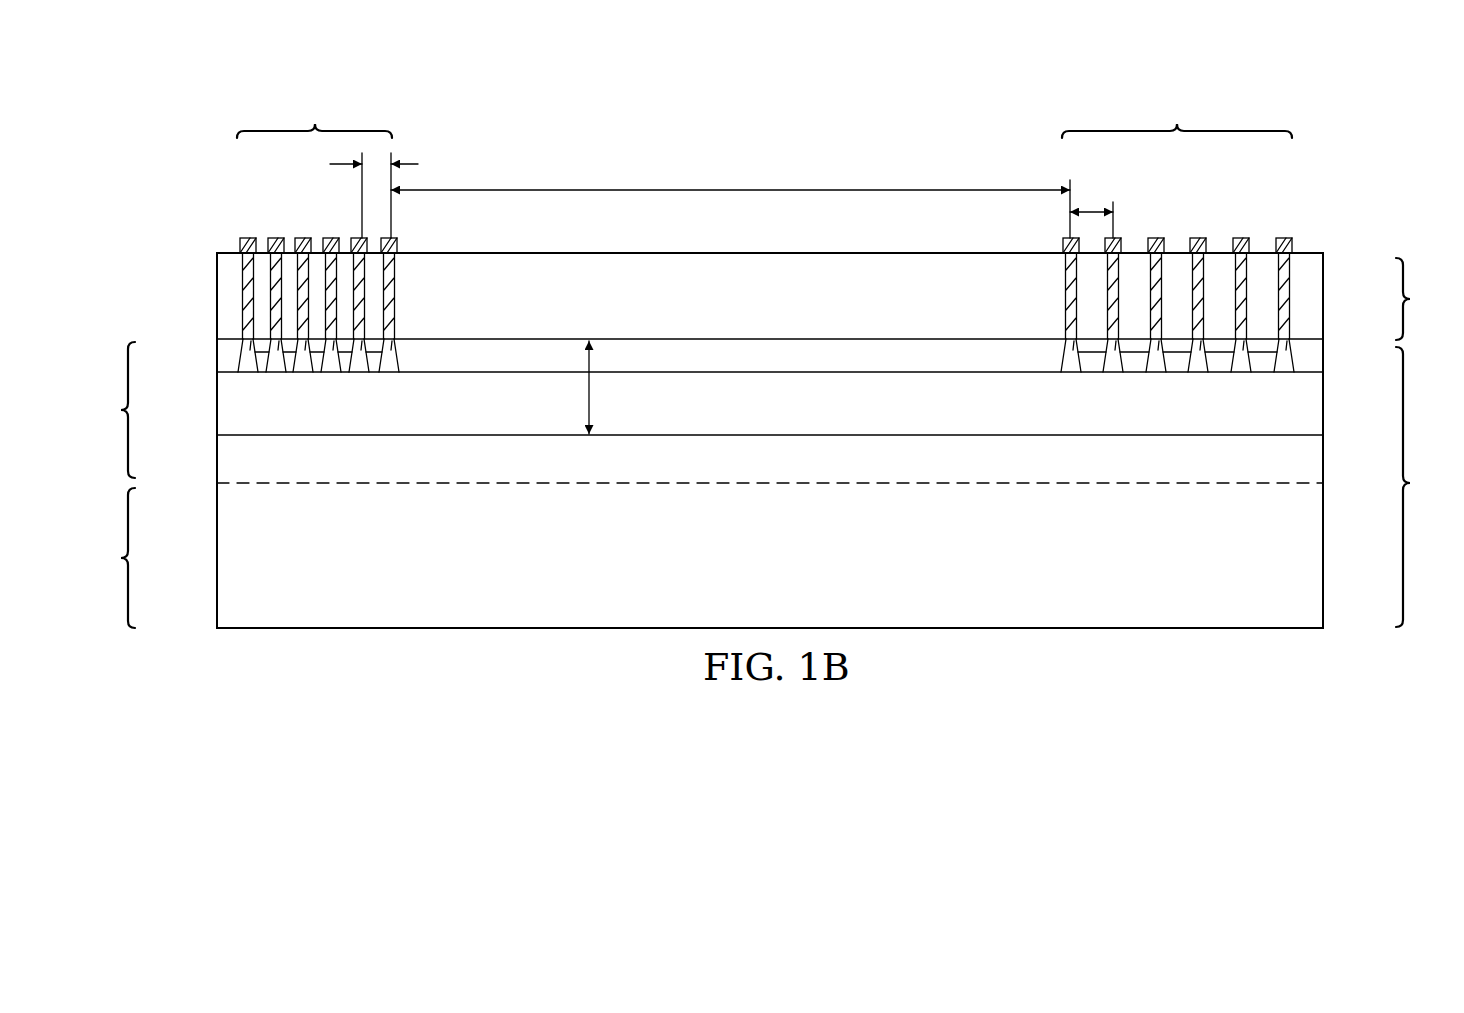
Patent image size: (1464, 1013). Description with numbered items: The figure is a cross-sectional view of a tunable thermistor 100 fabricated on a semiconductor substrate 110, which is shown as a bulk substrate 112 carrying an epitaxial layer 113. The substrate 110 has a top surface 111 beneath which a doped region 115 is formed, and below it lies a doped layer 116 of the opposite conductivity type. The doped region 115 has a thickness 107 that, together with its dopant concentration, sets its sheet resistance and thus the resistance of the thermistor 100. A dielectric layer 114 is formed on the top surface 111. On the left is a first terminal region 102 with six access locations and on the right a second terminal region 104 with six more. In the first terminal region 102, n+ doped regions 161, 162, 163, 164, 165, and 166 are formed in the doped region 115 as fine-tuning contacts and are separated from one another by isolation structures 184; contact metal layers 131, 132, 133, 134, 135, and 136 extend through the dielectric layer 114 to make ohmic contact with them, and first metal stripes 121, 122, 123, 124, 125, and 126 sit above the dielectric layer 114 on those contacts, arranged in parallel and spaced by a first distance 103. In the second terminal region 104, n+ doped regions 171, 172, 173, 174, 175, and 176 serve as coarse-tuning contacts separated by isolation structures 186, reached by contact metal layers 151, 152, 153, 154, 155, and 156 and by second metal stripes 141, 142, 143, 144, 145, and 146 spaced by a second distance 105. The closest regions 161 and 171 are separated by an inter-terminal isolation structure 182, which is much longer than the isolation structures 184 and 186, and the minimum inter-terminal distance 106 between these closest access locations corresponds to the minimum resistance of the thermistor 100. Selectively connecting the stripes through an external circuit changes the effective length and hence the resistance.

The tunable thermistor 100 is at (536, 116).
The first terminal region 102 is at (314, 116).
The first distance 103 is at (402, 164).
The second terminal region 104 is at (1177, 116).
The second distance 105 is at (1090, 212).
The minimum inter-terminal distance 106 is at (729, 189).
The thickness 107 is at (586, 392).
The substrate 110 is at (1427, 487).
The top surface 111 is at (771, 337).
The bulk substrate 112 is at (107, 558).
The epitaxial layer 113 is at (107, 410).
The dielectric layer 114 is at (1427, 299).
The doped region 115 is at (790, 419).
The doped layer 116 is at (790, 568).
The first metal stripe 121 is at (397, 245).
The first metal stripe 122 is at (356, 238).
The first metal stripe 123 is at (328, 238).
The first metal stripe 124 is at (300, 238).
The first metal stripe 125 is at (270, 238).
The first metal stripe 126 is at (240, 243).
The contact metal layer 131 is at (390, 271).
The contact metal layer 132 is at (360, 300).
The contact metal layer 133 is at (333, 325).
The contact metal layer 134 is at (304, 322).
The contact metal layer 135 is at (277, 296).
The contact metal layer 136 is at (248, 266).
The second metal stripe 141 is at (1063, 246).
The second metal stripe 142 is at (1118, 243).
The second metal stripe 143 is at (1157, 243).
The second metal stripe 144 is at (1198, 243).
The second metal stripe 145 is at (1243, 243).
The second metal stripe 146 is at (1285, 243).
The contact metal layer 151 is at (1072, 278).
The contact metal layer 152 is at (1113, 290).
The contact metal layer 153 is at (1156, 308).
The contact metal layer 154 is at (1199, 326).
The contact metal layer 155 is at (1242, 308).
The contact metal layer 156 is at (1283, 268).
The n+ doped region 161 is at (392, 362).
The n+ doped region 162 is at (362, 362).
The n+ doped region 163 is at (334, 362).
The n+ doped region 164 is at (306, 362).
The n+ doped region 165 is at (279, 362).
The n+ doped region 166 is at (250, 354).
The n+ doped region 171 is at (1069, 362).
The n+ doped region 172 is at (1112, 362).
The n+ doped region 173 is at (1155, 362).
The n+ doped region 174 is at (1197, 362).
The n+ doped region 175 is at (1240, 362).
The n+ doped region 176 is at (1287, 362).
The inter-terminal isolation structure 182 is at (695, 364).
The isolation structure 184 is at (253, 348).
The isolation structure 186 is at (1074, 348).